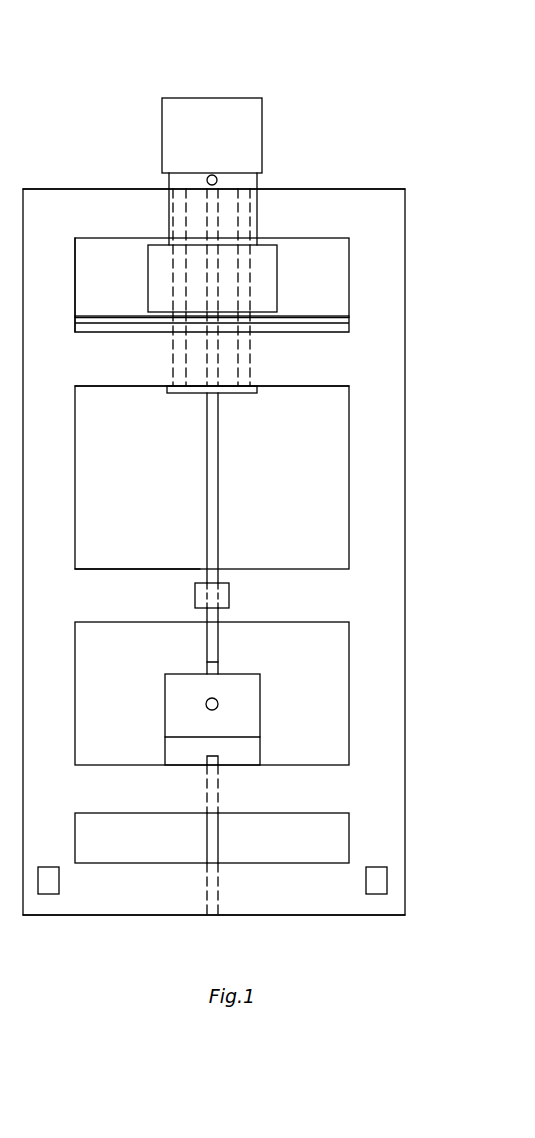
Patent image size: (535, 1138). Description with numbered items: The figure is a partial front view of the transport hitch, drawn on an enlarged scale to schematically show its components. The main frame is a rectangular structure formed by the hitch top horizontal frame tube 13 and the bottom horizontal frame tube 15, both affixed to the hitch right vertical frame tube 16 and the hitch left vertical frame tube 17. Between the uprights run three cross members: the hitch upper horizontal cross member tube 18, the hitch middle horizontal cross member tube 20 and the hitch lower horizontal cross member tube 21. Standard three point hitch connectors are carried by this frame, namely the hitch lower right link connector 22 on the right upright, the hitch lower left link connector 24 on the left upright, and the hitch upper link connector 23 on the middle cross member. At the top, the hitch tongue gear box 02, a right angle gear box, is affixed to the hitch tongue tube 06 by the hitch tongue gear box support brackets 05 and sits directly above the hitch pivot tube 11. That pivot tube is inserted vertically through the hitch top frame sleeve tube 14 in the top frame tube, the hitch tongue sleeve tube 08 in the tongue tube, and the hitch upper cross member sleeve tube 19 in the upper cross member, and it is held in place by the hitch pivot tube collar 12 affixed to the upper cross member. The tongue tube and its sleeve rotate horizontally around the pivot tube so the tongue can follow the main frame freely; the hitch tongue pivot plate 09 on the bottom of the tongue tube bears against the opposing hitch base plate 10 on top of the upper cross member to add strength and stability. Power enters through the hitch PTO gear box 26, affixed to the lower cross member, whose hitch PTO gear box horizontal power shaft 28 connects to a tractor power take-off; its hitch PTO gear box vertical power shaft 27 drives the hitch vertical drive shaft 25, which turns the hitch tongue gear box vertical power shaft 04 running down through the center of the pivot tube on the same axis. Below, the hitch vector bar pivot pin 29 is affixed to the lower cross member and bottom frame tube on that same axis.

The hitch tongue gear box 02 is at (170, 127).
The hitch tongue gear box vertical power shaft 04 is at (215, 176).
The hitch tongue gear box support brackets 05 is at (169, 218).
The hitch tongue tube 06 is at (277, 283).
The hitch tongue sleeve tube 08 is at (250, 272).
The hitch tongue pivot plate 09 is at (88, 316).
The hitch base plate 10 is at (104, 323).
The hitch pivot tube 11 is at (239, 356).
The hitch pivot tube collar 12 is at (246, 395).
The hitch top horizontal frame tube 13 is at (310, 192).
The hitch top frame sleeve tube 14 is at (253, 225).
The bottom horizontal frame tube 15 is at (178, 898).
The hitch right vertical frame tube 16 is at (65, 430).
The hitch left vertical frame tube 17 is at (390, 478).
The hitch upper horizontal cross member tube 18 is at (103, 380).
The hitch upper cross member sleeve tube 19 is at (250, 367).
The hitch middle horizontal cross member tube 20 is at (133, 585).
The hitch lower horizontal cross member tube 21 is at (153, 785).
The hitch lower right link connector 22 is at (48, 894).
The hitch upper link connector 23 is at (230, 591).
The hitch lower left link connector 24 is at (387, 877).
The hitch vertical drive shaft 25 is at (207, 450).
The hitch PTO gear box 26 is at (165, 694).
The hitch PTO gear box vertical power shaft 27 is at (218, 664).
The hitch PTO gear box horizontal power shaft 28 is at (218, 704).
The hitch vector bar pivot pin 29 is at (218, 845).